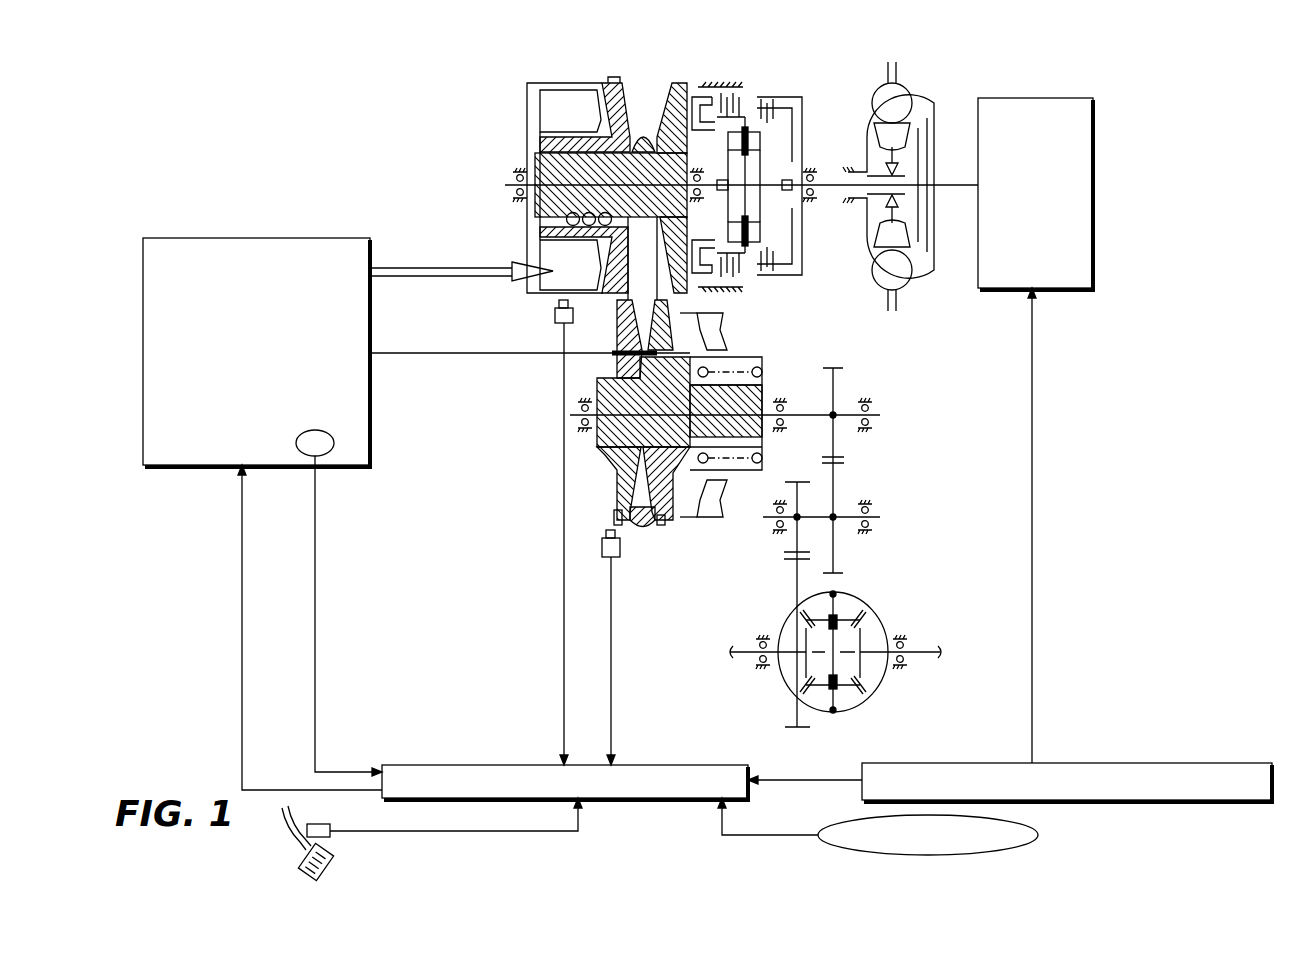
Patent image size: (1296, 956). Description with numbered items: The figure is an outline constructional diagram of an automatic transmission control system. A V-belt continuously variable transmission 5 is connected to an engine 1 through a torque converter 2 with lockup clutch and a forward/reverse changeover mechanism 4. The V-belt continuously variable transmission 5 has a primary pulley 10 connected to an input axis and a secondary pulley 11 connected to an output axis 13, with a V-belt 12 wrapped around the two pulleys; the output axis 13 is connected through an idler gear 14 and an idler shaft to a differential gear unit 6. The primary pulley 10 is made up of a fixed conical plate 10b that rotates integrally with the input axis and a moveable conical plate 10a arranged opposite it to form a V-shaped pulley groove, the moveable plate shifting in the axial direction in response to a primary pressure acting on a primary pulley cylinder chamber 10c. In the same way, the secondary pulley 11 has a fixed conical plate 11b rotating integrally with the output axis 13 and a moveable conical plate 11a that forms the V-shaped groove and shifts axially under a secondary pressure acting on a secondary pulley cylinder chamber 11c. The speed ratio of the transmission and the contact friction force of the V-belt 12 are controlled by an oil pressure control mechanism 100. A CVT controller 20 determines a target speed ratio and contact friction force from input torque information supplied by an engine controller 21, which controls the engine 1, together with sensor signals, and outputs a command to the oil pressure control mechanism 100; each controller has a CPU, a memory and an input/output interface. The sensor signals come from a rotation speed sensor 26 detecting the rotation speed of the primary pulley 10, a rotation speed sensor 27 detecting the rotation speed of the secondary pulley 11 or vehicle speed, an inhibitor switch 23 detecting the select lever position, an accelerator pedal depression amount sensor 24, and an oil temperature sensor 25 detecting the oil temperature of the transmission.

The engine 1 is at (1005, 102).
The torque converter 2 is at (892, 60).
The forward/reverse changeover mechanism 4 is at (724, 84).
The V-belt continuously variable transmission 5 is at (623, 161).
The differential gear unit 6 is at (876, 601).
The primary pulley 10 is at (623, 164).
The moveable conical plate 10a is at (608, 84).
The fixed conical plate 10b is at (688, 84).
The primary pulley cylinder chamber 10c is at (576, 86).
The secondary pulley 11 is at (679, 459).
The moveable conical plate 11a is at (661, 522).
The fixed conical plate 11b is at (613, 474).
The secondary pulley cylinder chamber 11c is at (685, 511).
The V-belt 12 is at (643, 531).
The output axis 13 is at (806, 413).
The idler gear 14 is at (800, 494).
The CVT controller 20 is at (420, 767).
The engine controller 21 is at (902, 767).
The inhibitor switch 23 is at (1038, 834).
The accelerator pedal depression amount sensor 24 is at (330, 845).
The oil temperature sensor 25 is at (330, 452).
The rotation speed sensor 26 is at (553, 316).
The rotation speed sensor 27 is at (604, 549).
The oil pressure control mechanism 100 is at (226, 250).